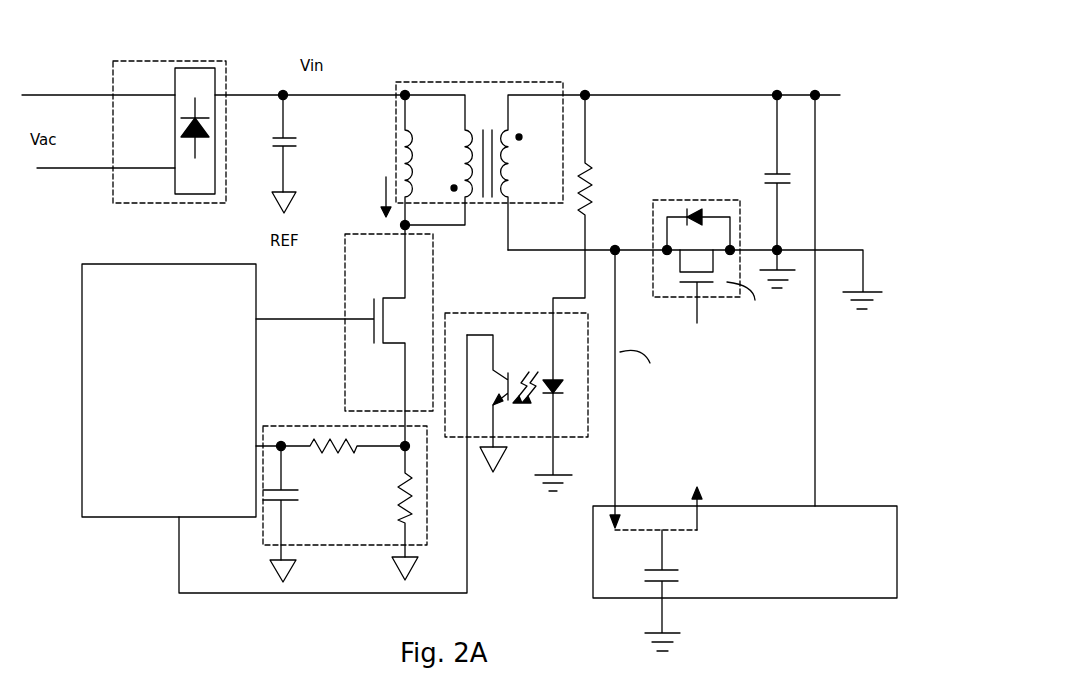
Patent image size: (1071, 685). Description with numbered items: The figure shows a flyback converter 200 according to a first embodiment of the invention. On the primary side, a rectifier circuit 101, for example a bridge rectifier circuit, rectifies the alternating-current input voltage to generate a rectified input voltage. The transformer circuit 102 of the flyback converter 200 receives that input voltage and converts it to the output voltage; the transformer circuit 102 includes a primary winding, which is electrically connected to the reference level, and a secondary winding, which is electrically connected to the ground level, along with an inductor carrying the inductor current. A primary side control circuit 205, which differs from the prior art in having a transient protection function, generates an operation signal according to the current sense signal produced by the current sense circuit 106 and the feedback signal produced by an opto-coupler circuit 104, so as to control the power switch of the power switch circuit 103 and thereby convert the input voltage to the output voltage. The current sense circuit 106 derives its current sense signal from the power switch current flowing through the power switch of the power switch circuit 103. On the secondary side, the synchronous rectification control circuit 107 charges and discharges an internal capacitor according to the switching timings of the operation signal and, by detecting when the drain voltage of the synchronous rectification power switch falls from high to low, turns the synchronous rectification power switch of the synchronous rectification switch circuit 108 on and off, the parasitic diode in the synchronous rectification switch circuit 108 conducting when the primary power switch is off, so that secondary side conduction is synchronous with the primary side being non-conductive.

The rectifier circuit 101 is at (148, 200).
The transformer circuit 102 is at (498, 82).
The power switch circuit 103 is at (388, 266).
The opto-coupler circuit 104 is at (538, 438).
The current sense circuit 106 is at (263, 533).
The synchronous rectification (SR) control circuit 107 is at (885, 592).
The synchronous rectification (SR) switch circuit 108 is at (737, 200).
The flyback converter 200 is at (840, 63).
The primary side control circuit 205 is at (148, 301).